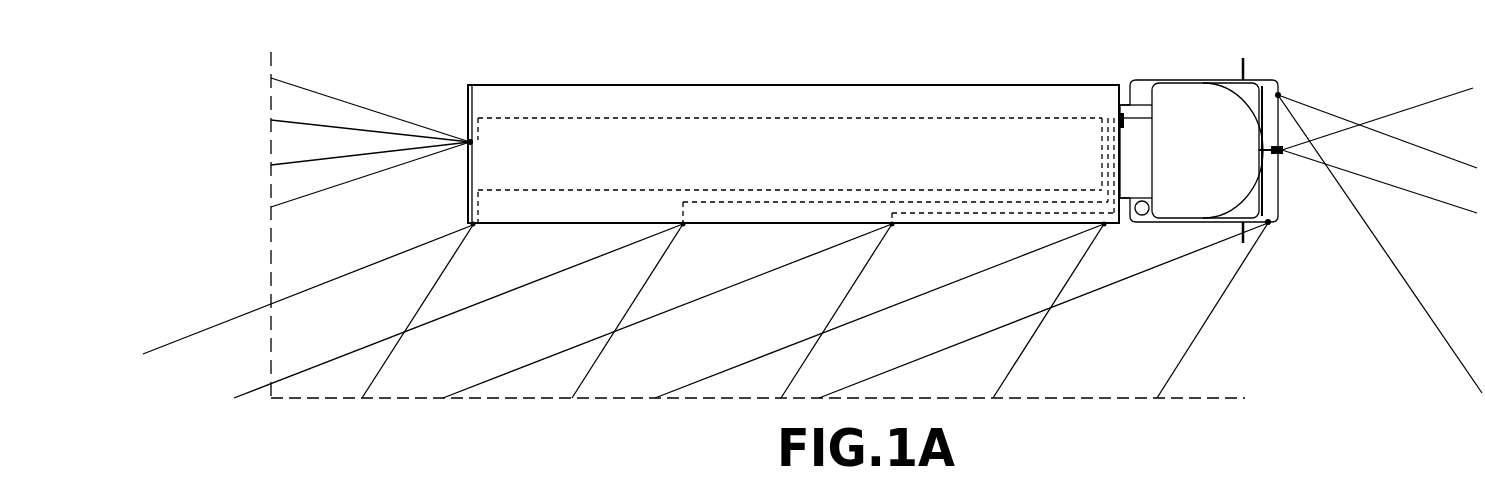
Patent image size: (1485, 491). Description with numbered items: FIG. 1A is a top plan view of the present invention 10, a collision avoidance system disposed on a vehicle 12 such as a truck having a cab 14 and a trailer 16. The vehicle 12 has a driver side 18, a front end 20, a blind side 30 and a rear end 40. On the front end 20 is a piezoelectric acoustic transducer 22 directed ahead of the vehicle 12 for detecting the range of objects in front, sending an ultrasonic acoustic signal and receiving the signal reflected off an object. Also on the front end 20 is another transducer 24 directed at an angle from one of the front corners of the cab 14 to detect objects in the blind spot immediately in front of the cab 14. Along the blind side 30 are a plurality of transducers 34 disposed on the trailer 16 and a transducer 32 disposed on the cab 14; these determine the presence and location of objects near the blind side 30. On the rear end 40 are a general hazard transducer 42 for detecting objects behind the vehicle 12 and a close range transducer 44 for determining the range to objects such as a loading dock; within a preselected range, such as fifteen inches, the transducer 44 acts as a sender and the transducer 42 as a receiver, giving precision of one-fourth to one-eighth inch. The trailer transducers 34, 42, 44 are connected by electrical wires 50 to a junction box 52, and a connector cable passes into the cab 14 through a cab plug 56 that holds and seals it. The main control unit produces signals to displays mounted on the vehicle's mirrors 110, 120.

The present invention 10 is at (1192, 63).
The vehicle 12 is at (938, 78).
The cab 14 is at (1207, 150).
The trailer 16 is at (790, 170).
The driver side 18 is at (1145, 78).
The front end 20 is at (1278, 90).
The piezoelectric acoustic transducer 22 is at (1283, 157).
The transducer 24 is at (1280, 96).
The blind side 30 is at (1267, 260).
The transducer 32 is at (1268, 224).
The transducers 34 is at (477, 227).
The rear end 40 is at (468, 90).
The general hazard transducer 42 is at (470, 127).
The close range transducer 44 is at (470, 153).
The electrical wires 50 is at (1091, 144).
The junction box 52 is at (1118, 118).
The cab plug 56 is at (1152, 116).
The mirror 110 is at (1247, 63).
The mirror 120 is at (1242, 238).